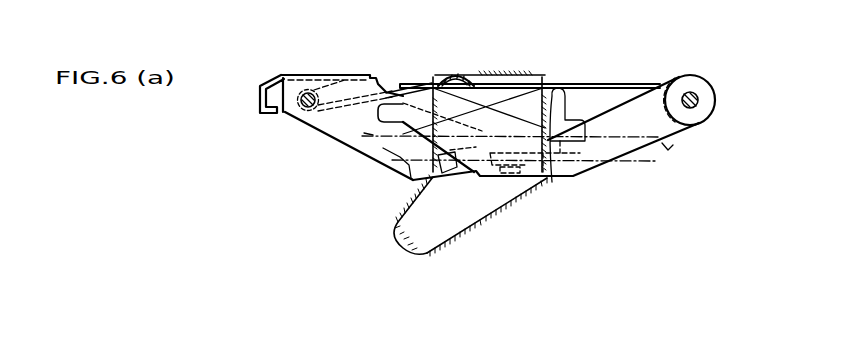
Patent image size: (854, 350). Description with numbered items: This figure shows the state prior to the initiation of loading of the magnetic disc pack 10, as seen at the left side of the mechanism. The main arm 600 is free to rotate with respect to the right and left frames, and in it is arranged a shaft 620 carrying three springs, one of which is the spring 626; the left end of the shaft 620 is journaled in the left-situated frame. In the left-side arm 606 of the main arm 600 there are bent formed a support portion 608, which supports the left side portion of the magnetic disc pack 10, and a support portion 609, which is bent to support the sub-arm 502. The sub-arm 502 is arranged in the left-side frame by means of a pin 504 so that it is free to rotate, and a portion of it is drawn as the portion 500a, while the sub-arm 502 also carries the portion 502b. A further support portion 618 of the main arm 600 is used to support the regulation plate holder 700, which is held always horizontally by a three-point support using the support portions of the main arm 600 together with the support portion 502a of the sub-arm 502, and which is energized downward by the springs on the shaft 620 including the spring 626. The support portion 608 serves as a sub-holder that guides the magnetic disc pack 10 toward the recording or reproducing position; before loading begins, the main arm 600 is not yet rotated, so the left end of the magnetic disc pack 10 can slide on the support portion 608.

The main arm 600 is at (333, 74).
The shaft 620 is at (303, 108).
The spring 626 is at (455, 71).
The regulation plate holder 700 is at (630, 84).
The slider portion 500a is at (535, 75).
The sub-arm 502 is at (672, 150).
The support portion 502a is at (376, 158).
The arm portion 502b is at (477, 170).
The pin 504 is at (698, 100).
The left-side arm 606 is at (350, 135).
The support portion 618 is at (554, 182).
The magnetic disc pack 10 is at (629, 172).
The support portion 609 is at (460, 172).
The support portion 608 is at (493, 183).